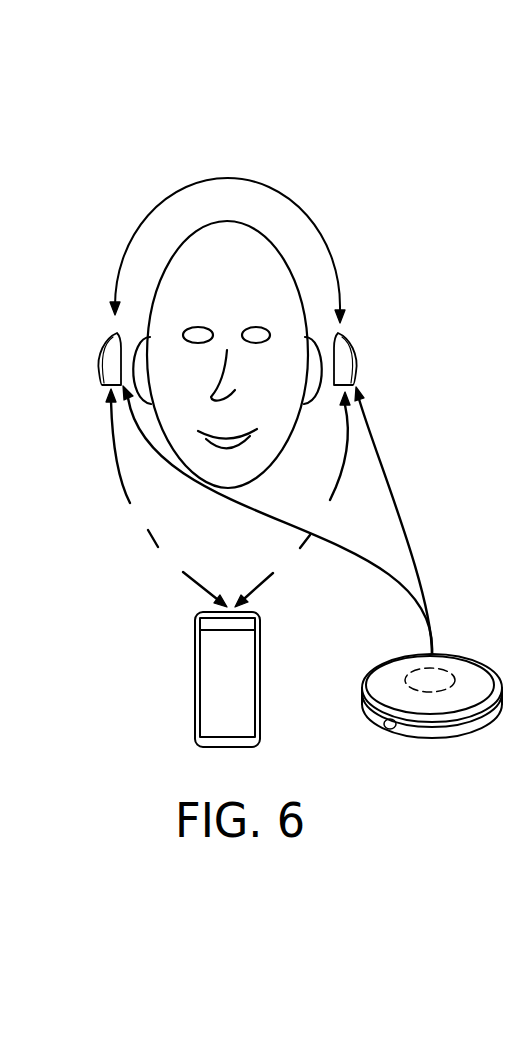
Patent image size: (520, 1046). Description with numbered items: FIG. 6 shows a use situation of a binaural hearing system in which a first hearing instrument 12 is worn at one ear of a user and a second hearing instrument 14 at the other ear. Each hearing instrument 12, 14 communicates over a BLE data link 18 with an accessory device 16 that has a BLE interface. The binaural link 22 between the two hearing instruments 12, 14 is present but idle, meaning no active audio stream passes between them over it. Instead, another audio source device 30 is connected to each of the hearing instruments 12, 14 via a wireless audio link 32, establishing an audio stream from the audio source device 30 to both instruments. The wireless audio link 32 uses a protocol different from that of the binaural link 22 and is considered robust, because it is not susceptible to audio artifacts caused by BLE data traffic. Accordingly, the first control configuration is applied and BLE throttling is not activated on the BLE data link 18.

The first hearing instrument 12 is at (100, 351).
The second hearing instrument 14 is at (358, 347).
The accessory device 16 is at (195, 662).
The BLE data link 18 is at (116, 469).
The binaural link 22 is at (138, 237).
The audio source device 30 is at (477, 721).
The wireless audio link 32 is at (420, 547).